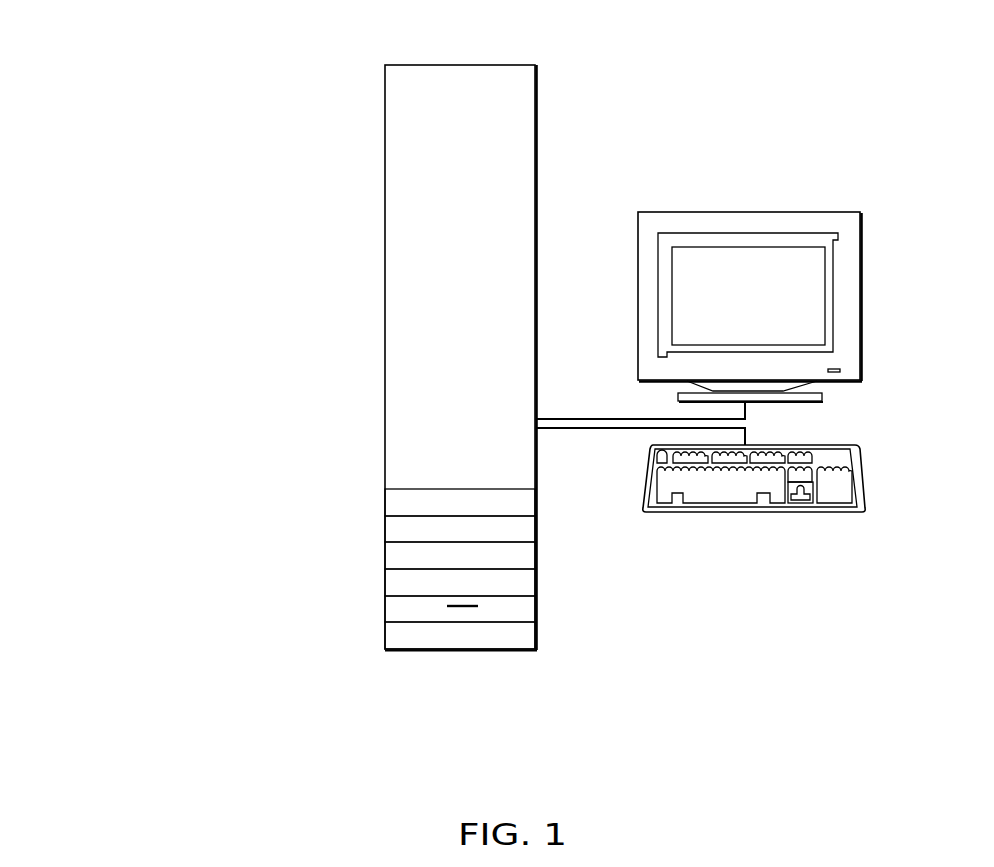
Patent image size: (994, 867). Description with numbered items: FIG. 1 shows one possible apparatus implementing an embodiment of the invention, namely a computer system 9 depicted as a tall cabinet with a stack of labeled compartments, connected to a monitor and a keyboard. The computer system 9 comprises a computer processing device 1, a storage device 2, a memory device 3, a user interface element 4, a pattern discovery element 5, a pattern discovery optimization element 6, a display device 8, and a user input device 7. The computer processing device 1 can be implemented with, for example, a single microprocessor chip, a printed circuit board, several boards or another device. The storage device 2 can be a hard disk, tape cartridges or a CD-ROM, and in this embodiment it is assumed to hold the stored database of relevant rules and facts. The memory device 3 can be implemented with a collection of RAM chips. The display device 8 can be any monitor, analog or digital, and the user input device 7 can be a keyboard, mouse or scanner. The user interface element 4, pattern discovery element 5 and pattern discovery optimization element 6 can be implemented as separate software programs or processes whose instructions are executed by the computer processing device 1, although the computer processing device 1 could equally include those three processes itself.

The computer processing device 1 is at (385, 635).
The storage device 2 is at (387, 608).
The memory device 3 is at (387, 578).
The user interface element 4 is at (385, 555).
The pattern discovery element 5 is at (387, 530).
The pattern discovery optimization element 6 is at (387, 498).
The user input device 7 is at (777, 545).
The display device 8 is at (762, 182).
The computer system 9 is at (465, 63).